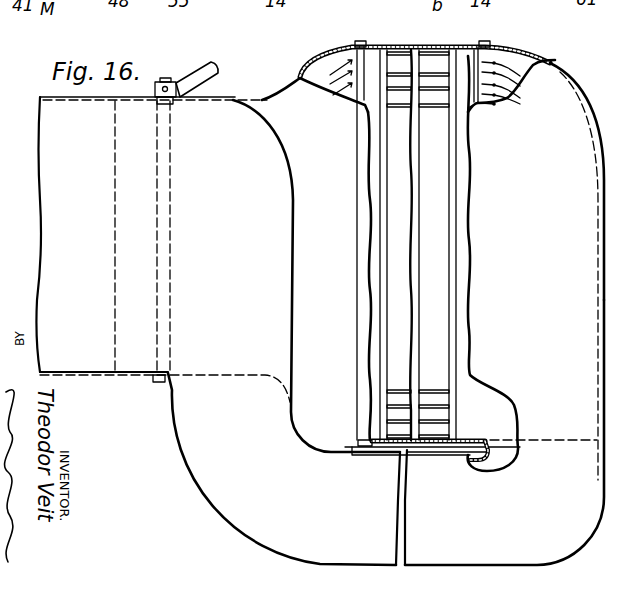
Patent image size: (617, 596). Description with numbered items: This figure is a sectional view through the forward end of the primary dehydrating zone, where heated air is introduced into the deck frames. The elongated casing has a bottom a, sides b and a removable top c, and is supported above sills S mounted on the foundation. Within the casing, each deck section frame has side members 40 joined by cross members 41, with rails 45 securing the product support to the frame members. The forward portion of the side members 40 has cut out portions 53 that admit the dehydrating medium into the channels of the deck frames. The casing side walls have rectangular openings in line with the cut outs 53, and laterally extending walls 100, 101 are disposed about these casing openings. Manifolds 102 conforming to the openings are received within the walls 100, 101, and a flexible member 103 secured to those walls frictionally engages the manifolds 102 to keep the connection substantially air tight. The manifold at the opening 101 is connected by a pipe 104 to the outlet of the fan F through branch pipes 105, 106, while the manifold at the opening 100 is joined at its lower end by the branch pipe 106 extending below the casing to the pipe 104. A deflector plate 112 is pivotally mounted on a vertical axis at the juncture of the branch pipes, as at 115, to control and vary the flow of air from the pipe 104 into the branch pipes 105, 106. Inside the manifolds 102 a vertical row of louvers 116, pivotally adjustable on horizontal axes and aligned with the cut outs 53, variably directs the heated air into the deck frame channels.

The side members 40 is at (383, 408).
The cross members 41 is at (442, 93).
The rails 45 is at (386, 76).
The cut out portions 53 is at (465, 85).
The casing opening wall 100 is at (506, 103).
The casing opening wall 101 is at (343, 96).
The manifold 102 is at (288, 84).
The flexible member 103 is at (488, 46).
The pipe 104 is at (163, 249).
The branch pipe 105 is at (270, 108).
The branch pipe 106 is at (282, 522).
The deflector plate 112 is at (113, 223).
The deflector plate pivot mounting 115 is at (167, 78).
The louvers 116 is at (352, 76).
The bottom a is at (437, 448).
The sides b is at (380, 300).
The removable top c is at (402, 47).
The fan F is at (67, 152).
The sills S is at (606, 561).